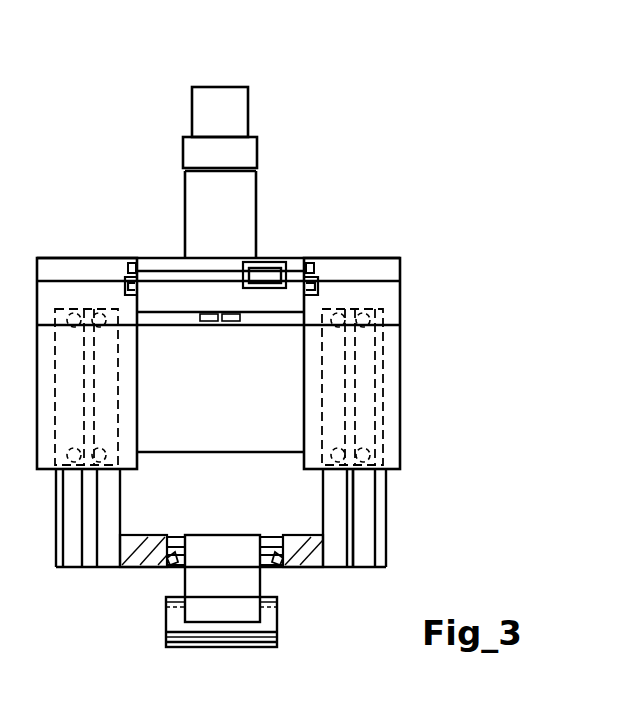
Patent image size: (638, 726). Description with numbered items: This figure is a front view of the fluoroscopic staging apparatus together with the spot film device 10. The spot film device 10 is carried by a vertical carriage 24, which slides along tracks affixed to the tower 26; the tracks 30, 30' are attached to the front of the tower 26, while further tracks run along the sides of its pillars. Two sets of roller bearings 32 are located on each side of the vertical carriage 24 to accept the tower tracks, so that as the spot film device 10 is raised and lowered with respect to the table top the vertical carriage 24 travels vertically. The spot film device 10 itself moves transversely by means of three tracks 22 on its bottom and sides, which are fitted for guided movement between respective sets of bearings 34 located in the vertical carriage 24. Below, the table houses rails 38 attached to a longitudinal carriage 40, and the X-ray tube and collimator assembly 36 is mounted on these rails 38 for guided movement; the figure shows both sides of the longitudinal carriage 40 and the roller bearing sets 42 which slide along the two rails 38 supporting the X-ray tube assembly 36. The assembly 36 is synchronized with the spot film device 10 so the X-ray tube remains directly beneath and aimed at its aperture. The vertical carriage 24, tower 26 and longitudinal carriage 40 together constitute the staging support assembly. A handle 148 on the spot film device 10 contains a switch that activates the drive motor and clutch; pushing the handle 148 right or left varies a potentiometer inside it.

The spot film device 10 is at (280, 262).
The tracks 22 is at (140, 284).
The vertical carriage 24 is at (393, 421).
The tower 26 is at (372, 522).
The tracks 30 is at (120, 518).
The tracks 30' is at (359, 518).
The roller bearings 32 is at (112, 447).
The bearings 34 is at (125, 266).
The X-ray tube and collimator assembly 36 is at (268, 623).
The track 38 is at (162, 560).
The longitudinal carriage 40 is at (133, 563).
The roller bearing sets 42 is at (174, 538).
The handle 148 is at (272, 288).